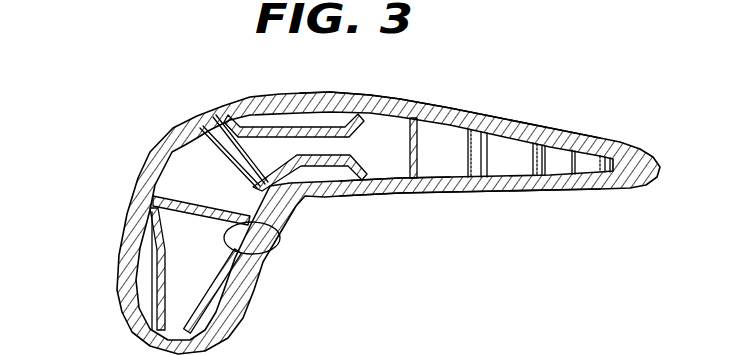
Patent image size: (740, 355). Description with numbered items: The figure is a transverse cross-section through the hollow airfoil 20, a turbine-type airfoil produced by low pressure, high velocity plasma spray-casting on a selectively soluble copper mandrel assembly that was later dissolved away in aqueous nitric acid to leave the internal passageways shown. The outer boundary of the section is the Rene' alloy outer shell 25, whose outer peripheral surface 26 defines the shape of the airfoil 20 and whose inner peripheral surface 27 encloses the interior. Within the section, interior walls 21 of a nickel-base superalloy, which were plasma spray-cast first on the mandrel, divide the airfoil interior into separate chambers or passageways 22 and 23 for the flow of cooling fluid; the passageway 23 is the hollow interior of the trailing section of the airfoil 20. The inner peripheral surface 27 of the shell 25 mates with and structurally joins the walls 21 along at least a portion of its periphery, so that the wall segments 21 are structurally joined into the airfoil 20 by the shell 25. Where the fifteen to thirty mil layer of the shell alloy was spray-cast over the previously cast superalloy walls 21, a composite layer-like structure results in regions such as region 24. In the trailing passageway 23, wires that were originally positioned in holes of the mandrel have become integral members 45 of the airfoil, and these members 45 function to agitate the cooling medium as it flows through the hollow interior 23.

The hollow airfoil 20 is at (88, 255).
The walls 21 is at (352, 170).
The passageways 22 is at (338, 224).
The passageway (hollow interior of trailing section) 23 is at (518, 191).
The region 24 is at (279, 236).
The outer shell 25 is at (305, 94).
The outer peripheral surface 26 is at (393, 188).
The inner peripheral surface 27 is at (440, 172).
The integral members 45 is at (478, 140).